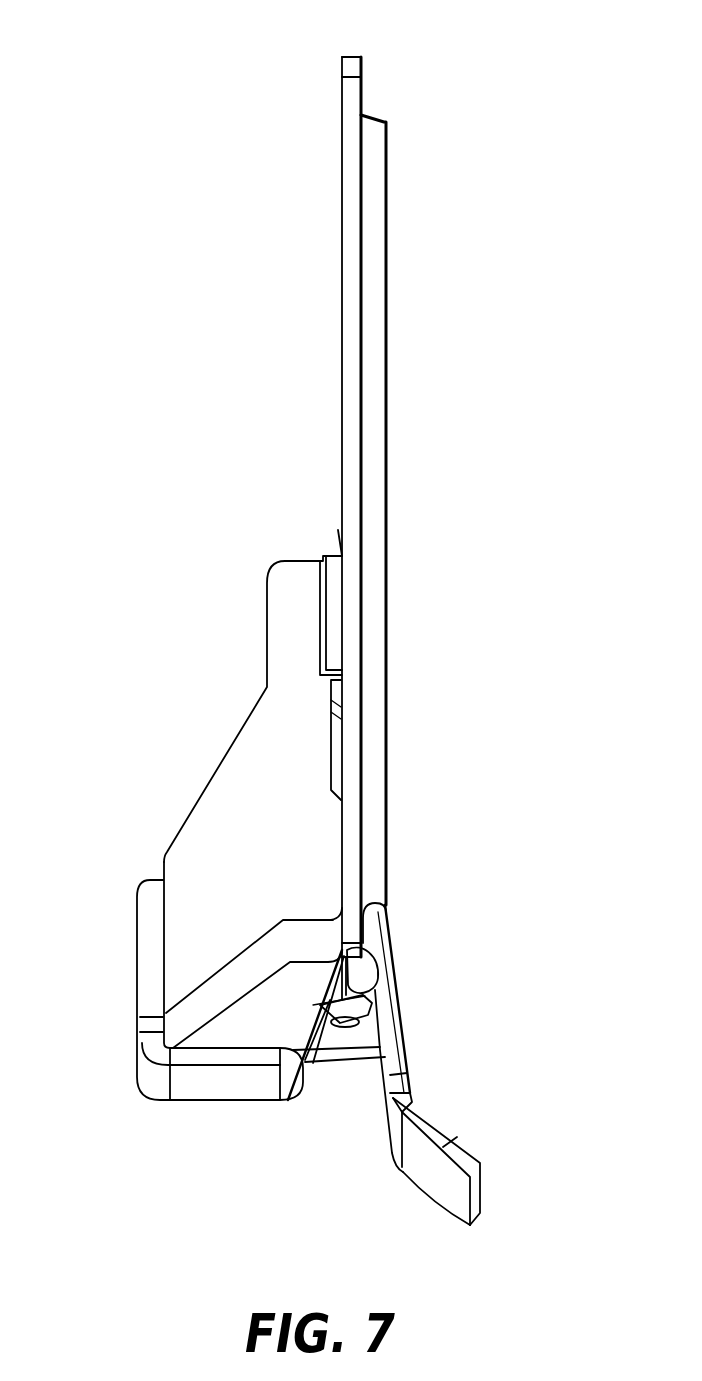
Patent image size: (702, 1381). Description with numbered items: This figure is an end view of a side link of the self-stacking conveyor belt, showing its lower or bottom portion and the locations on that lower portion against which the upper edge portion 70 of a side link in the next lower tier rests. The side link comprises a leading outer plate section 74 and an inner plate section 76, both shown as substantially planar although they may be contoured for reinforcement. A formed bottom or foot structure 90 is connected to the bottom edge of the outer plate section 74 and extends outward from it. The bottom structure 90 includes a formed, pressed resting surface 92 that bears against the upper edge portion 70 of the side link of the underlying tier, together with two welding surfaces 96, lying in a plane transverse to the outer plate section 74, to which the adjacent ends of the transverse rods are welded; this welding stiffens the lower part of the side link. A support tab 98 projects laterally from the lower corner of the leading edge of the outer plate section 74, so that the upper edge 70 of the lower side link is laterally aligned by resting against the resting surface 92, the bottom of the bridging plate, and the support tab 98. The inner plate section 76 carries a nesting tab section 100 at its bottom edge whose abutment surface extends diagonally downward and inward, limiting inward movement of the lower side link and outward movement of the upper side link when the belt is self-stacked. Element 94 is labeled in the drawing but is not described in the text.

The upper edge portion 70 is at (354, 56).
The outer plate section 74 is at (341, 301).
The inner plate section 76 is at (387, 301).
The bottom structure 90 is at (152, 968).
The resting surface 92 is at (368, 1003).
The lower guide plate 94 is at (348, 782).
The welding surfaces 96 is at (235, 816).
The support tab 98 is at (370, 975).
The nesting tab section 100 is at (446, 1181).